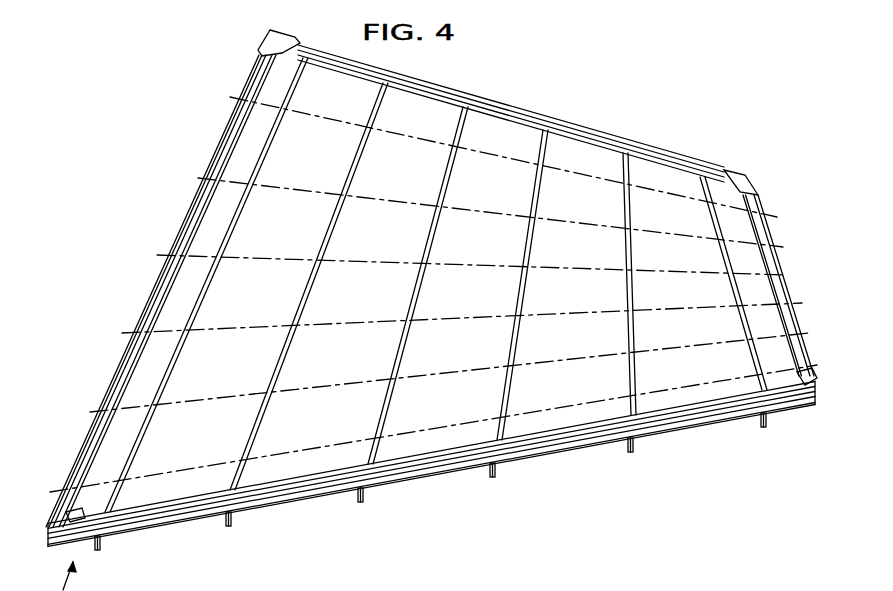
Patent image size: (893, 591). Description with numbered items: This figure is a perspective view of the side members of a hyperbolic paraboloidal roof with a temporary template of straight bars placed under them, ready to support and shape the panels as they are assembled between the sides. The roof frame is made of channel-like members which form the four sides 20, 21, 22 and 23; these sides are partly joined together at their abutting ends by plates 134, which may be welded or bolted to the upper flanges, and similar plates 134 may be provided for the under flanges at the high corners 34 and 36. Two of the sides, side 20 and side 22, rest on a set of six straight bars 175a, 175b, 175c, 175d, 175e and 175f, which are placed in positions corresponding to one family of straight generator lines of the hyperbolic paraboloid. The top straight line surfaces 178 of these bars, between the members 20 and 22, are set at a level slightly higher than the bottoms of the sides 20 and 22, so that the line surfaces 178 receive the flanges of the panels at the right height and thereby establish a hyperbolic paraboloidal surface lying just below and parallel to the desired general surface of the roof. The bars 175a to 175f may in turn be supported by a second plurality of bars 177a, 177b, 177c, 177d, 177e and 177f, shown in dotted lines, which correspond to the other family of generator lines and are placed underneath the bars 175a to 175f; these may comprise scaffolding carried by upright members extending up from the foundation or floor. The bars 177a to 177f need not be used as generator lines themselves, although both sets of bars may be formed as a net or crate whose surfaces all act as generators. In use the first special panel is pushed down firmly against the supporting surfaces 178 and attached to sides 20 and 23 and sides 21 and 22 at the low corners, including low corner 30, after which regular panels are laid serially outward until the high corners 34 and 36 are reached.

The side 20 is at (428, 452).
The side 21 is at (777, 266).
The side 22 is at (572, 124).
The side 23 is at (194, 210).
The low corner 30 is at (736, 148).
The high corner 34 is at (298, 34).
The high corner 36 is at (803, 428).
The plate 134 is at (262, 44).
The straight bar 175a is at (101, 548).
The straight bar 175b is at (231, 525).
The straight bar 175c is at (363, 500).
The straight bar 175d is at (495, 476).
The straight bar 175e is at (633, 451).
The straight bar 175f is at (762, 426).
The bar 177a is at (229, 95).
The bar 177b is at (198, 176).
The bar 177c is at (158, 254).
The bar 177d is at (123, 333).
The bar 177e is at (90, 411).
The bar 177f is at (62, 492).
The top straight line surface 178 is at (182, 358).